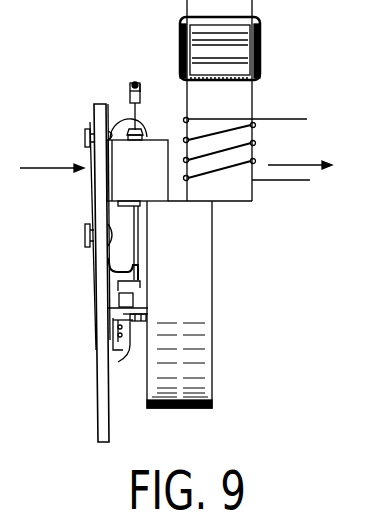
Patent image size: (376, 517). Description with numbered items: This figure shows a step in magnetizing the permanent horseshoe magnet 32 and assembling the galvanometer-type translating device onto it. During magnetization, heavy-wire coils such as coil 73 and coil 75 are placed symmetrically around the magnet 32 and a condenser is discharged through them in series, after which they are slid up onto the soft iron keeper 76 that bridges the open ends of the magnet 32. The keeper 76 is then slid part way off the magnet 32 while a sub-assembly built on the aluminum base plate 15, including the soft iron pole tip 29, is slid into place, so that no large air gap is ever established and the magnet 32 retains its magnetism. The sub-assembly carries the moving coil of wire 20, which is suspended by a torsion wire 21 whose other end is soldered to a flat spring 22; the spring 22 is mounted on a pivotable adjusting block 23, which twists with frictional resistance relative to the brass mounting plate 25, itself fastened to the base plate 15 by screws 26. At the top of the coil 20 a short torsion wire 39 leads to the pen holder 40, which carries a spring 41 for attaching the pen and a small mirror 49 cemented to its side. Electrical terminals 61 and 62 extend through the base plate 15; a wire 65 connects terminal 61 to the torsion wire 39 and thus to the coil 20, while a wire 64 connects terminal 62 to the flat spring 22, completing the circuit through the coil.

The base plate 15 is at (100, 428).
The coil of wire 20 is at (146, 138).
The torsion wire 21 is at (137, 232).
The flat spring 22 is at (120, 285).
The adjusting block 23 is at (120, 300).
The mounting plate 25 is at (117, 363).
The screws 26 is at (125, 343).
The pole tip 29 is at (113, 178).
The permanent horseshoe magnet 32 is at (210, 352).
The torsion wire 39 is at (137, 116).
The pen holder 40 is at (140, 98).
The spring 41 is at (135, 82).
The mirror 49 is at (140, 87).
The electrical terminal 61 is at (88, 132).
The electrical terminal 62 is at (85, 237).
The wire 64 is at (126, 262).
The wire 65 is at (112, 134).
The coil 73 is at (262, 46).
The coil 75 is at (255, 143).
The keeper 76 is at (246, 99).